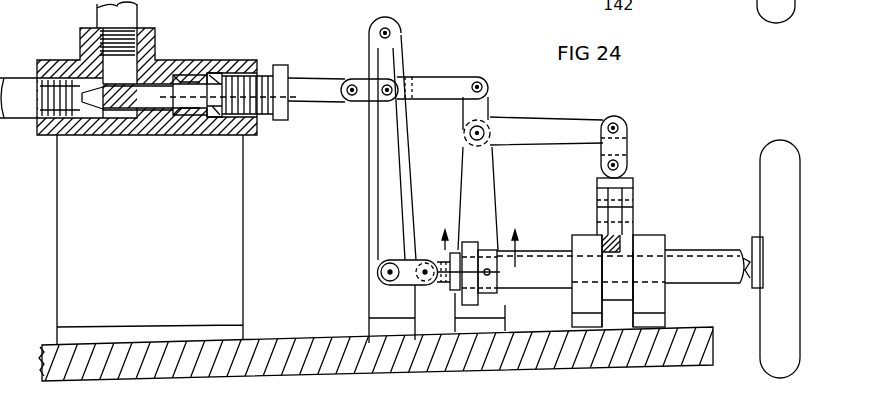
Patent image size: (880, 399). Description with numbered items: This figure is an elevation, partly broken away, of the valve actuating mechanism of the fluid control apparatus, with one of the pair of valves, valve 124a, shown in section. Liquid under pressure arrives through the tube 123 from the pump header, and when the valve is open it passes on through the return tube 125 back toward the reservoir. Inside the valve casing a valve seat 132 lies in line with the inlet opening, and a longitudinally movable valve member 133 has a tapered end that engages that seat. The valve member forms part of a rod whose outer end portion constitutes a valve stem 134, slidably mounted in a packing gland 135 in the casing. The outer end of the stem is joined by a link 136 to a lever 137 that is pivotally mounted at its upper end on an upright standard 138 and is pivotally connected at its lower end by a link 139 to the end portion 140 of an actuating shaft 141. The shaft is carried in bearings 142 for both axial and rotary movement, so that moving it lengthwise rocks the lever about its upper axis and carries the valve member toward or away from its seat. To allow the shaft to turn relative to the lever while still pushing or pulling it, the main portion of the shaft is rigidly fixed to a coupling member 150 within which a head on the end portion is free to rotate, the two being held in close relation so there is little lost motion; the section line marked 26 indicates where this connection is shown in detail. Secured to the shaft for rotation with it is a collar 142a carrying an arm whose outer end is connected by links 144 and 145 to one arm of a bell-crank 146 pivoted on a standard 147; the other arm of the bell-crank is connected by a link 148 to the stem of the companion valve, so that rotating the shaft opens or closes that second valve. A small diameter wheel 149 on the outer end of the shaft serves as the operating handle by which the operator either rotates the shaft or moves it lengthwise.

The tube 123 is at (32, 108).
The valve 124a is at (205, 63).
The return tube 125 is at (127, 20).
The valve seat 132 is at (100, 119).
The valve member 133 is at (127, 99).
The valve stem 134 is at (300, 90).
The packing gland 135 is at (245, 123).
The link 136 is at (372, 95).
The lever 137 is at (387, 204).
The upright standard 138 is at (375, 167).
The link 139 is at (405, 268).
The end portion of actuating shaft 140 is at (445, 284).
The actuating shaft 141 is at (537, 262).
The bearings 142 is at (652, 318).
The collar 142a is at (620, 272).
The link 144 is at (628, 225).
The link 145 is at (622, 145).
The bell-crank 146 is at (557, 132).
The standard 147 is at (478, 190).
The link 148 is at (428, 88).
The wheel 149 is at (777, 332).
The coupling member 150 is at (470, 294).
The section line 26- 26 is at (483, 248).